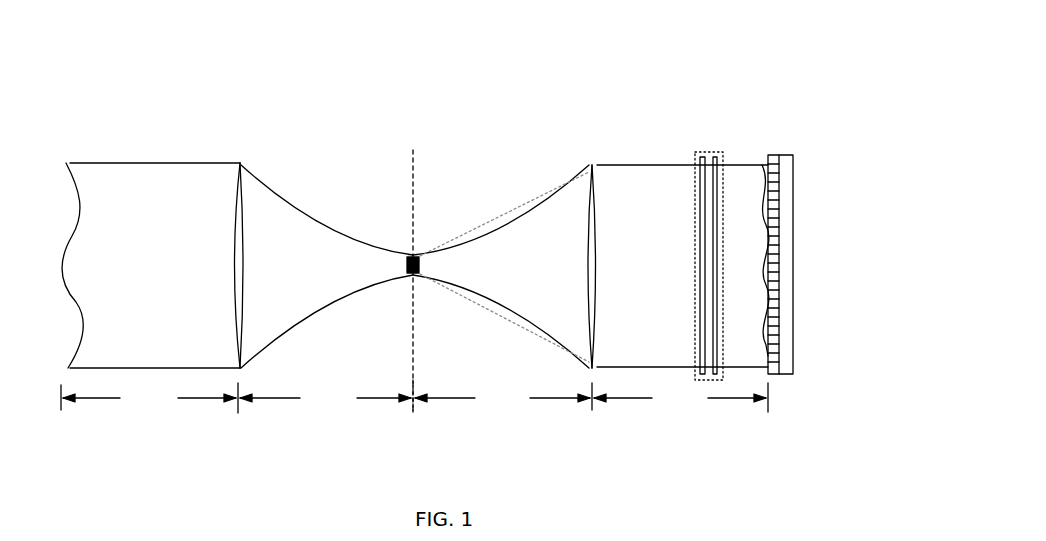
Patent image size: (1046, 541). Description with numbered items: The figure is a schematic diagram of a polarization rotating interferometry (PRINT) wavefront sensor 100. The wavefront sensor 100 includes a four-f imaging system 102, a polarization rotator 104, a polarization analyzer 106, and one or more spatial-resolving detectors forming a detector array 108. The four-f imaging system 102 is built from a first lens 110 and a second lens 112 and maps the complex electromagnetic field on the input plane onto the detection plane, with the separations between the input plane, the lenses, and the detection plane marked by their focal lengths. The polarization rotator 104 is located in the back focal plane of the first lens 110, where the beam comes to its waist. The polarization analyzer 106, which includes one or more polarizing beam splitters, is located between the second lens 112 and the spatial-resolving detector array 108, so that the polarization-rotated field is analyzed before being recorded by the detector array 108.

The wavefront sensor 100 is at (830, 47).
The 4-f imaging system 102 is at (300, 172).
The polarization rotator 104 is at (418, 257).
The polarization analyzer 106 is at (696, 153).
The spatial-resolving detector array 108 is at (800, 236).
The first lens 110 is at (231, 208).
The second lens 112 is at (586, 222).